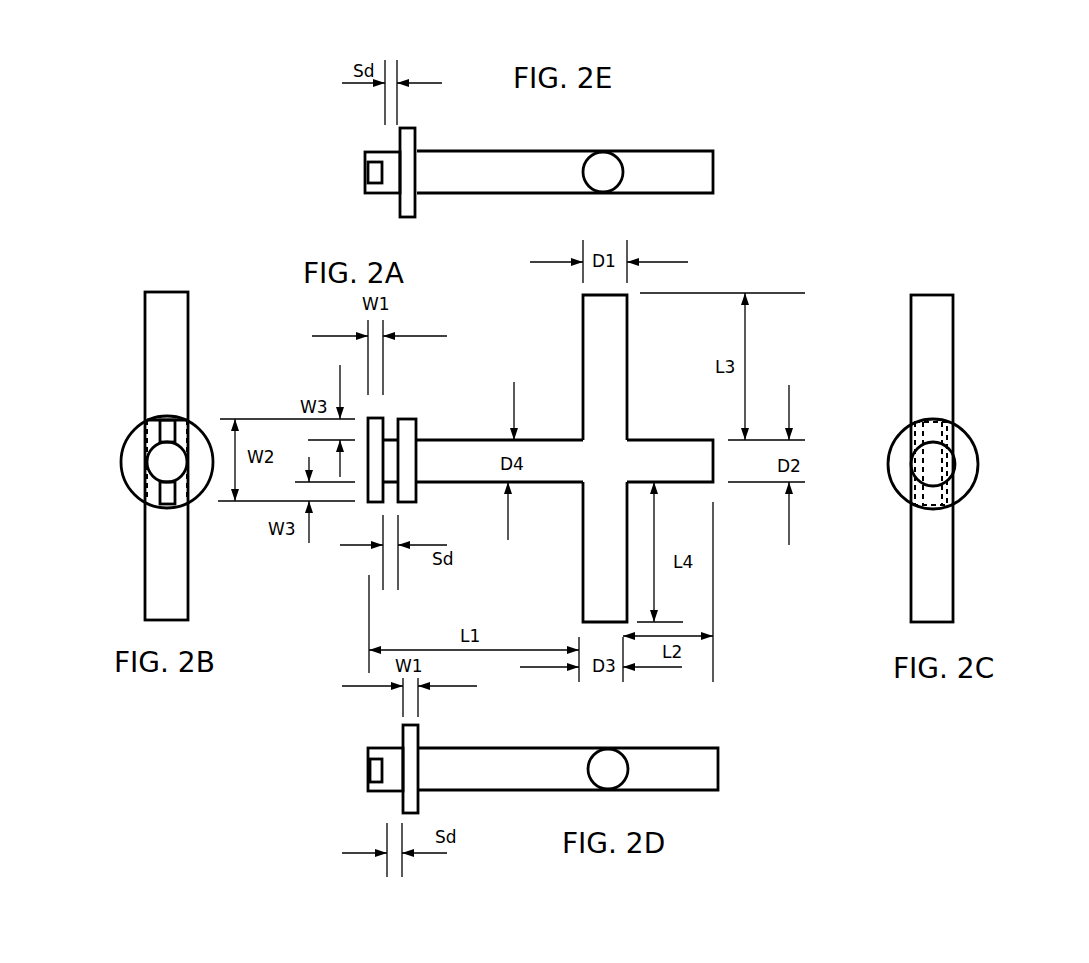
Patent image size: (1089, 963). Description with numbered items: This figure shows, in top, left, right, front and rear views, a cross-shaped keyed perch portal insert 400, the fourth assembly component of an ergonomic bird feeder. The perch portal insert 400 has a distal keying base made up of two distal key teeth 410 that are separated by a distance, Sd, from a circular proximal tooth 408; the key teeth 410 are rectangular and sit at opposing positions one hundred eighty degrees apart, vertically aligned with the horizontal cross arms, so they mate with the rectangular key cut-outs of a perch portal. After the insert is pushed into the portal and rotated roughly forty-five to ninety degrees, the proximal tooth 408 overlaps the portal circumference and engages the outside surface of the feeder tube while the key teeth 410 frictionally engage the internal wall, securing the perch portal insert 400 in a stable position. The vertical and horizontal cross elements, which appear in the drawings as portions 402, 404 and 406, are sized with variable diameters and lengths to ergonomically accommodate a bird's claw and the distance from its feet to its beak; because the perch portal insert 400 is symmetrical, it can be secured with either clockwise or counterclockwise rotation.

In FIG. 2E, the keyed perch portal insert 400 is at (650, 65).
In FIG. 2D, the keyed perch portal insert 400 is at (748, 772).
In FIG. 2A, the keyed perch portal insert 400 is at (745, 262).
In FIG. 2B, the keyed perch portal insert 400 is at (136, 258).
In FIG. 2C, the keyed perch portal insert 400 is at (981, 293).
In FIG. 2E, the cross member / vertical arm 402 is at (598, 157).
In FIG. 2D, the cross member / vertical arm 402 is at (610, 755).
In FIG. 2A, the cross member / vertical arm 402 is at (583, 297).
In FIG. 2B, the cross member / vertical arm 402 is at (152, 335).
In FIG. 2C, the cross member / vertical arm 402 is at (956, 362).
In FIG. 2E, the shaft end portion 404 is at (682, 150).
In FIG. 2D, the shaft end portion 404 is at (705, 748).
In FIG. 2A, the shaft end portion 404 is at (642, 440).
In FIG. 2C, the shaft end portion 404 is at (947, 457).
In FIG. 2E, the shaft 406 is at (498, 150).
In FIG. 2D, the shaft 406 is at (470, 747).
In FIG. 2A, the shaft 406 is at (455, 440).
In FIG. 2B, the shaft 406 is at (157, 469).
In FIG. 2E, the circular proximal tooth 408 is at (417, 138).
In FIG. 2D, the circular proximal tooth 408 is at (413, 732).
In FIG. 2A, the circular proximal tooth 408 is at (413, 419).
In FIG. 2B, the circular proximal tooth 408 is at (126, 449).
In FIG. 2E, the distal key teeth 410 is at (367, 175).
In FIG. 2D, the distal key teeth 410 is at (368, 773).
In FIG. 2A, the distal key teeth 410 is at (382, 418).
In FIG. 2B, the distal key teeth 410 is at (178, 425).
In FIG. 2C, the distal key teeth 410 is at (935, 417).